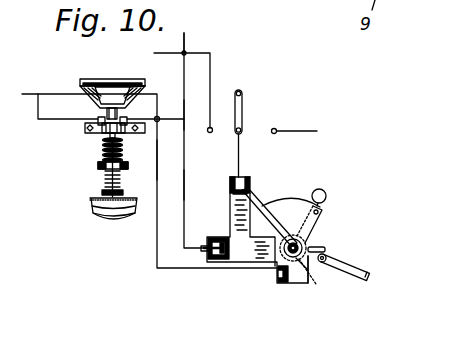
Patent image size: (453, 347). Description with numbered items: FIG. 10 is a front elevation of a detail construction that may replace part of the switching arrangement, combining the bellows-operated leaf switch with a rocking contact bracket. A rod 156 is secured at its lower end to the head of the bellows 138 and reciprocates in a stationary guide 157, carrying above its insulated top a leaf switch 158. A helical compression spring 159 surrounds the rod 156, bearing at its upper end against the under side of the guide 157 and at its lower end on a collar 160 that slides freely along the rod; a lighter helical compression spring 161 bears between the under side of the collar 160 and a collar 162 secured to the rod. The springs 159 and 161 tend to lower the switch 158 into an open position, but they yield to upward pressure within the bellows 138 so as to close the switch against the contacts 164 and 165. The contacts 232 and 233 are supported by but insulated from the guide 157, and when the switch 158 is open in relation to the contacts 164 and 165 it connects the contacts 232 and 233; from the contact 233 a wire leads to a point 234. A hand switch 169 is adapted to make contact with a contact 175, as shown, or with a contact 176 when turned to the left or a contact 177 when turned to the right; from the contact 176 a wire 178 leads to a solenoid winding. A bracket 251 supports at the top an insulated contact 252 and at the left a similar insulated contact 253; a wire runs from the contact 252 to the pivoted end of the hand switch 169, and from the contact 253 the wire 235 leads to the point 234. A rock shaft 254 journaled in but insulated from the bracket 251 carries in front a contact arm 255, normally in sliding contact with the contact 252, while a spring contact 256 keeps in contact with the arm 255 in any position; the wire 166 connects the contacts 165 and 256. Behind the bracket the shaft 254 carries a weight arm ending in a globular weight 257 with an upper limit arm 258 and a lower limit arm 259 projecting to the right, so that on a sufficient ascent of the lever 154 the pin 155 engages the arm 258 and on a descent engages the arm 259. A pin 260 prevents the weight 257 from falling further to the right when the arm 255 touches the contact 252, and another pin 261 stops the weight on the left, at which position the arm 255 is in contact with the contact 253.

The bellows 138 is at (91, 206).
The lever 154 is at (371, 276).
The pin 155 is at (327, 261).
The rod 156 is at (104, 178).
The guide 157 is at (86, 129).
The leaf switch 158 is at (112, 97).
The helical compression spring 159 is at (101, 149).
The collar 160 is at (98, 166).
The lighter helical compression spring 161 is at (120, 180).
The collar 162 is at (100, 192).
The contact 164 is at (90, 97).
The contact 165 is at (140, 92).
The wire 166 is at (157, 164).
The hand switch 169 is at (243, 112).
The contact 175 is at (242, 94).
The contact 176 is at (210, 133).
The contact 177 is at (276, 133).
The wire 178 is at (212, 82).
The contact 232 is at (98, 118).
The contact 233 is at (125, 117).
The point 234 is at (185, 118).
The wire 235 is at (185, 184).
The bracket 251 is at (240, 212).
The contact 252 is at (244, 178).
The contact 253 is at (210, 255).
The rock shaft 254 is at (313, 236).
The contact arm 255 is at (262, 206).
The spring contact 256 is at (278, 270).
The globular weight 257 is at (326, 194).
The upper limit arm 258 is at (328, 249).
The lower limit arm 259 is at (312, 268).
The pin 260 is at (322, 211).
The pin 261 is at (272, 212).